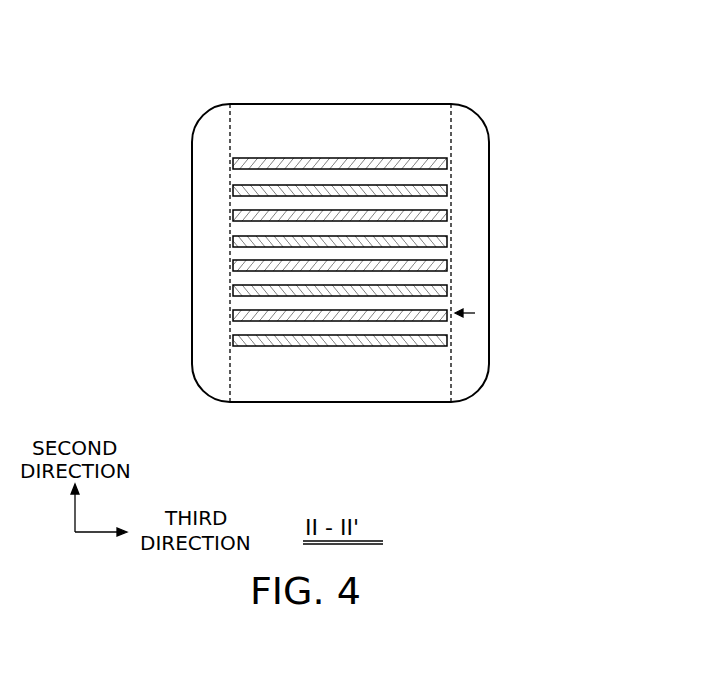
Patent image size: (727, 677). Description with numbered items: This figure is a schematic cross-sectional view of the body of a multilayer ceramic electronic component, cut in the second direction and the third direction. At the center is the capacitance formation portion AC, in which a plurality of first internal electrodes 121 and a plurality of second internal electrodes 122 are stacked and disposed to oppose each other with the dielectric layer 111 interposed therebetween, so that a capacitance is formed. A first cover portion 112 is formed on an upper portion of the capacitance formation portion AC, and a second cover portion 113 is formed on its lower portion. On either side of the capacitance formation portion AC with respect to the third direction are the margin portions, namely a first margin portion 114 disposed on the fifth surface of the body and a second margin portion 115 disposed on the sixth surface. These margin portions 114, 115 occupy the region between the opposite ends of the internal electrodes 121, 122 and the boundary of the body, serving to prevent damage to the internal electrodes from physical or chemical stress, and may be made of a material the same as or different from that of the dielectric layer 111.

The dielectric layer 111 is at (347, 186).
The first cover portion 112 is at (323, 117).
The second cover portion 113 is at (367, 383).
The first margin portion 114 is at (205, 334).
The second margin portion 115 is at (473, 250).
The first internal electrode 121 is at (369, 158).
The second internal electrode 122 is at (408, 245).
The capacitance formation portion AC is at (475, 313).